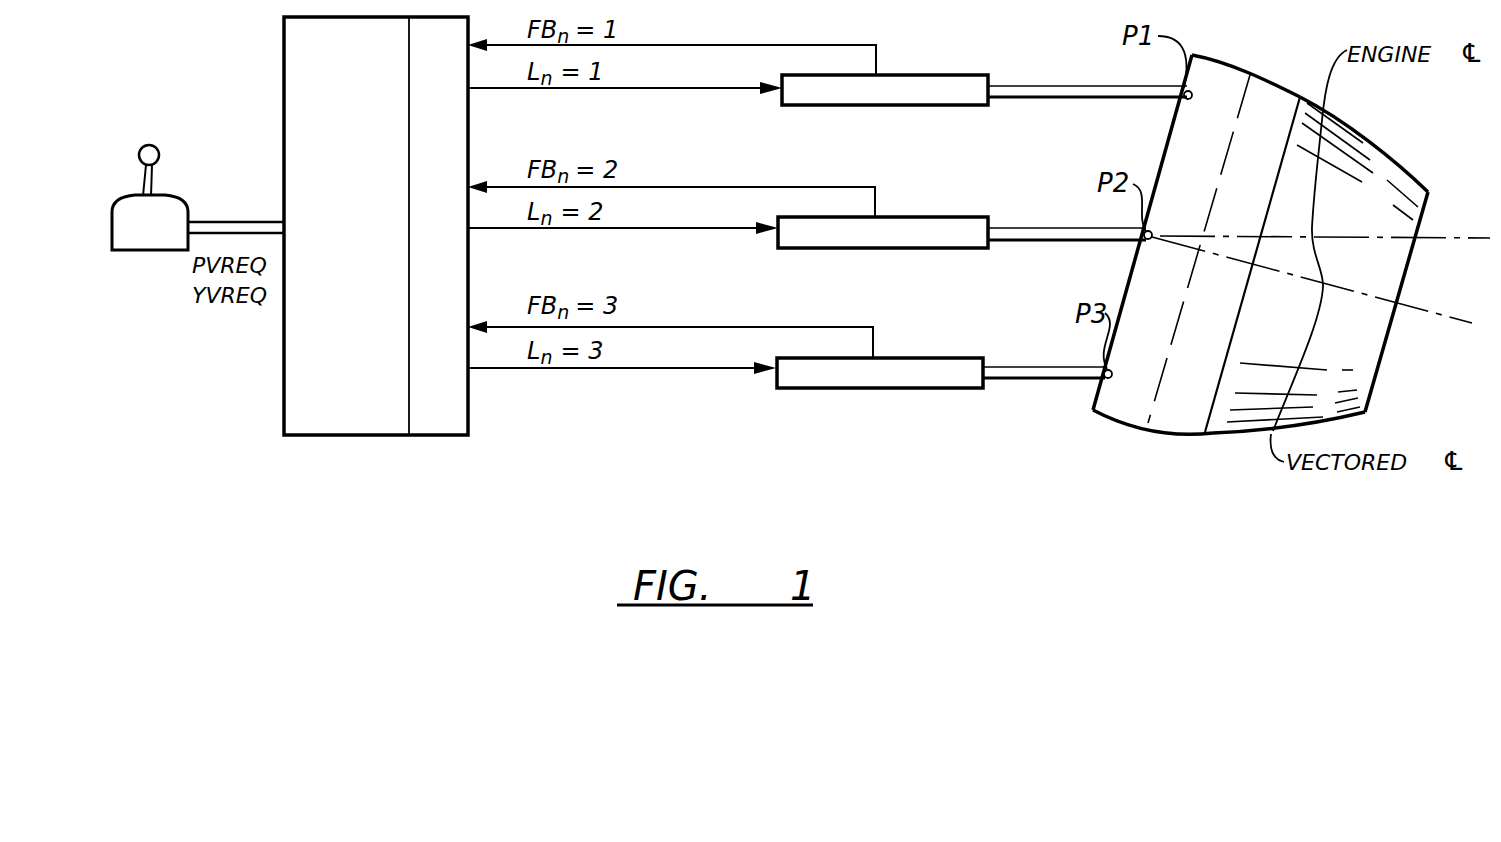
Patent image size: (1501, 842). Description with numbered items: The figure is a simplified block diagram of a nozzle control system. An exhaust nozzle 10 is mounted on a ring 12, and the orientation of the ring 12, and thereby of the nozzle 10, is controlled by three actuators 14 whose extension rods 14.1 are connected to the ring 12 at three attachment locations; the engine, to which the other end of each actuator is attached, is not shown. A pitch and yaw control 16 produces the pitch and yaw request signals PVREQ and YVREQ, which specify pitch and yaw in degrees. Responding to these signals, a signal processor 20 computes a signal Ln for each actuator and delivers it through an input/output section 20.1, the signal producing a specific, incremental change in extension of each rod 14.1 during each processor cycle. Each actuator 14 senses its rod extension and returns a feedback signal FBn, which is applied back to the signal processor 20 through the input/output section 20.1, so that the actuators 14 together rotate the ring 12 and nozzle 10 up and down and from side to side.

The exhaust nozzle 10 is at (1291, 220).
The ring 12 is at (1229, 64).
The actuators 14 is at (912, 88).
The extension rods 14.1 is at (1017, 88).
The pitch and yaw control 16 is at (160, 239).
The signal processor 20 is at (283, 411).
The input/output section 20.1 is at (425, 425).